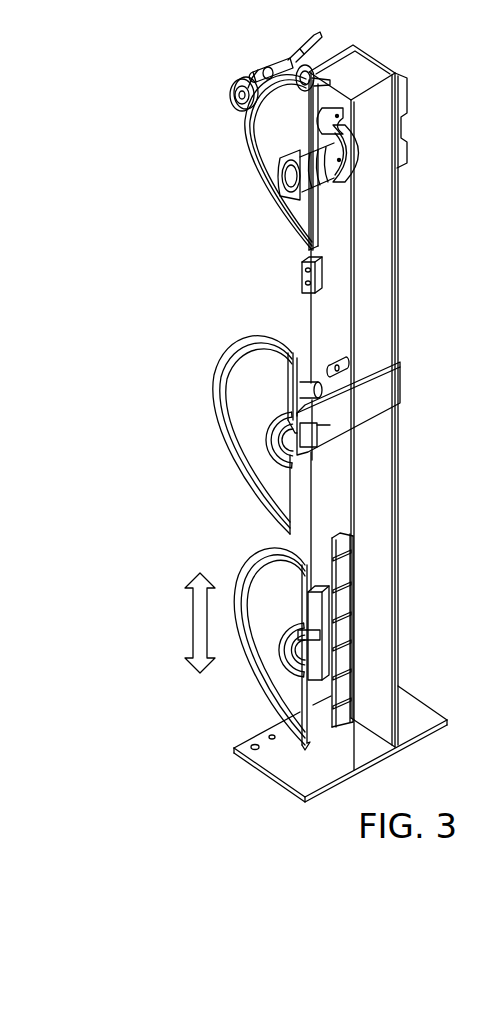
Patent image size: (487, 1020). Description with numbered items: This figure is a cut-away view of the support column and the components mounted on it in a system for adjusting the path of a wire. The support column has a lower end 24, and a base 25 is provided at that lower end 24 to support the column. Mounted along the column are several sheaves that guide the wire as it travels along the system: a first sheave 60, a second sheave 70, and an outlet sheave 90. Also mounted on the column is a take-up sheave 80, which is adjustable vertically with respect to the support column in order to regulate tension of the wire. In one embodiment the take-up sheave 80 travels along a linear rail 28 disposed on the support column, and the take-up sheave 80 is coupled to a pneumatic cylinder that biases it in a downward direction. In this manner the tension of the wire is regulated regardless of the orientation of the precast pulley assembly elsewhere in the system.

The lower end 24 is at (402, 728).
The base 25 is at (420, 712).
The linear rail 28 is at (337, 617).
The first sheave 60 is at (325, 178).
The second sheave 70 is at (272, 130).
The take-up sheave 80 is at (266, 630).
The outlet sheave 90 is at (255, 385).